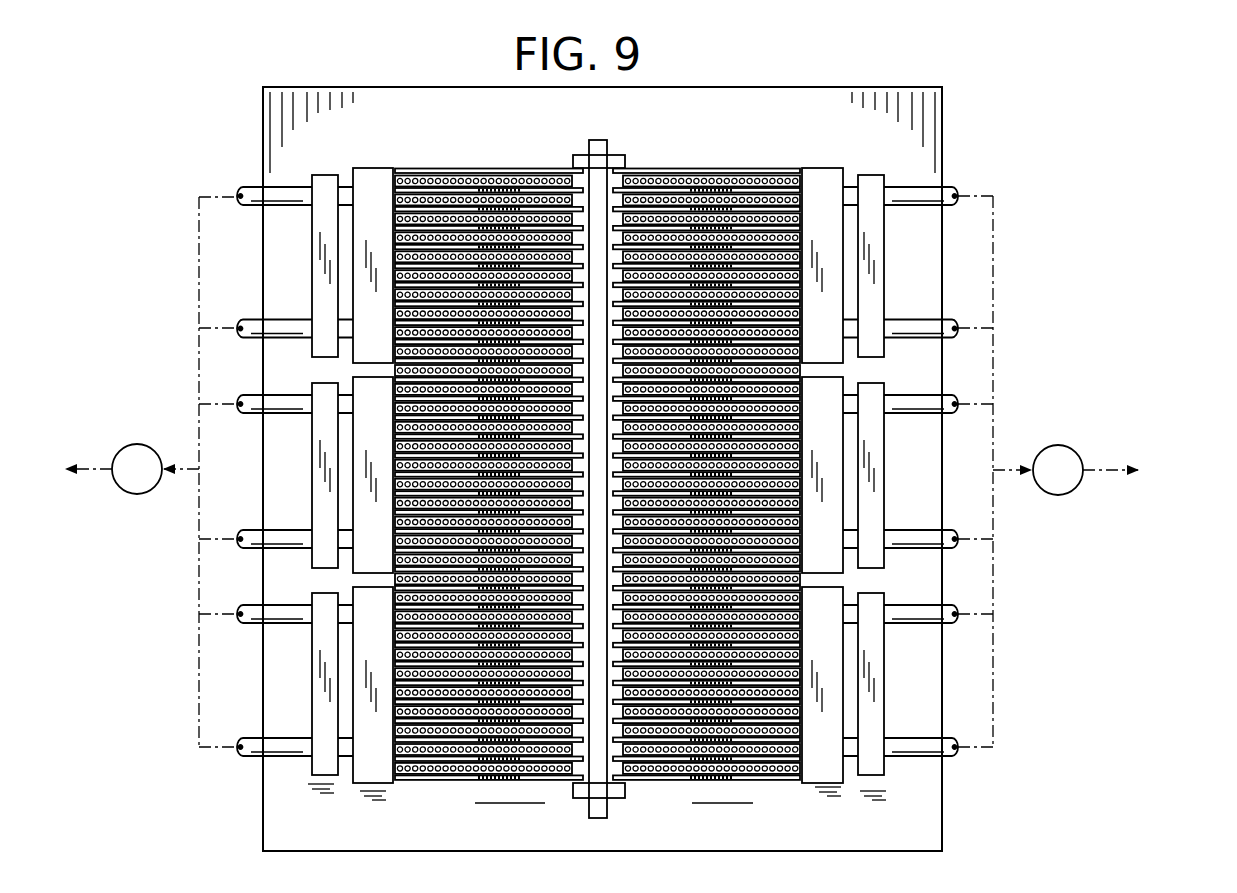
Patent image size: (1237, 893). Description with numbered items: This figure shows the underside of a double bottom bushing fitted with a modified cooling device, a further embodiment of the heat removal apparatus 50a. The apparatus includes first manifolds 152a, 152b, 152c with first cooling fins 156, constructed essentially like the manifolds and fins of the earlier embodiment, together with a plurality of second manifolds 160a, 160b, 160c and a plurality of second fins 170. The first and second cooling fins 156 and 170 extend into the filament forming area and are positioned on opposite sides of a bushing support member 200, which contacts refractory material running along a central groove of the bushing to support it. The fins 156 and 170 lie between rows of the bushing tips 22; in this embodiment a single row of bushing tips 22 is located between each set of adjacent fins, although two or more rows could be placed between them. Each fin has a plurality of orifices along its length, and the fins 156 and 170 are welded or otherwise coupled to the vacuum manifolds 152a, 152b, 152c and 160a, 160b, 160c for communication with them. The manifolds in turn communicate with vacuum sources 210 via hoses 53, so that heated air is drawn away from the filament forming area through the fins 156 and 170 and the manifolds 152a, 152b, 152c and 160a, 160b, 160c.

The heat removal apparatus 50a is at (1126, 347).
The bushing support member 200 is at (601, 164).
The hoses 53 is at (912, 192).
The bushing tips 22 is at (445, 774).
The first cooling fins 156 is at (545, 742).
The second fins 170 is at (790, 744).
The first manifold 152a is at (372, 757).
The first manifold 152b is at (362, 555).
The first manifold 152c is at (362, 345).
The second manifold 160a is at (826, 710).
The second manifold 160b is at (826, 442).
The second manifold 160c is at (822, 293).
The vacuum sources 210 is at (138, 494).